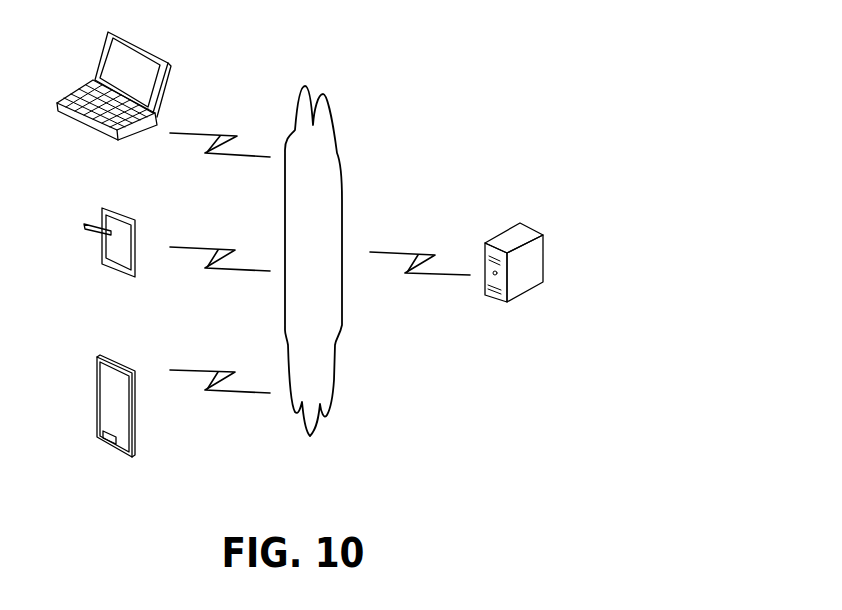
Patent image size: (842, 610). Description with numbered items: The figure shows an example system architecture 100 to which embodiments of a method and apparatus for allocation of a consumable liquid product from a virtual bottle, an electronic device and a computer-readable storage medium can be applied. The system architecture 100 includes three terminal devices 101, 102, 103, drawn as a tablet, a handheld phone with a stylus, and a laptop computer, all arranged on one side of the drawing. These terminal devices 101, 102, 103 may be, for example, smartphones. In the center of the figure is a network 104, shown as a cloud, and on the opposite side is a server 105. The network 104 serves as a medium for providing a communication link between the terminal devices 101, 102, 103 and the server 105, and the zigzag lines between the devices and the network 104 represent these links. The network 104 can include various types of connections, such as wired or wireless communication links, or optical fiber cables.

The system architecture 100 is at (537, 73).
The terminal device 101 is at (116, 423).
The terminal device 102 is at (109, 260).
The terminal device 103 is at (114, 103).
The network 104 is at (313, 261).
The server 105 is at (514, 282).